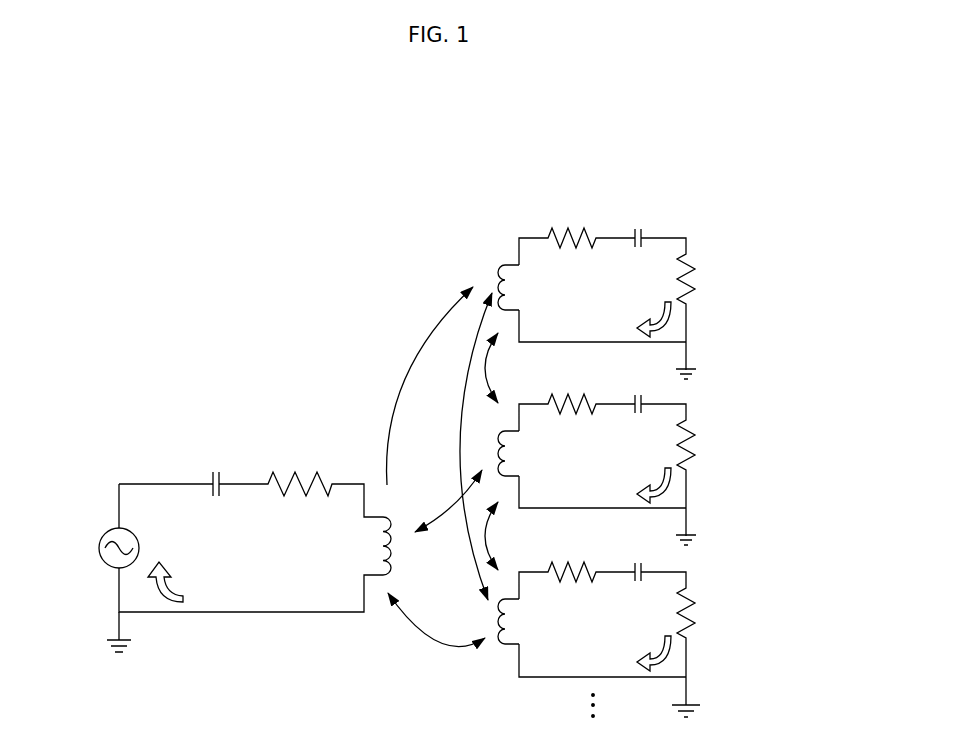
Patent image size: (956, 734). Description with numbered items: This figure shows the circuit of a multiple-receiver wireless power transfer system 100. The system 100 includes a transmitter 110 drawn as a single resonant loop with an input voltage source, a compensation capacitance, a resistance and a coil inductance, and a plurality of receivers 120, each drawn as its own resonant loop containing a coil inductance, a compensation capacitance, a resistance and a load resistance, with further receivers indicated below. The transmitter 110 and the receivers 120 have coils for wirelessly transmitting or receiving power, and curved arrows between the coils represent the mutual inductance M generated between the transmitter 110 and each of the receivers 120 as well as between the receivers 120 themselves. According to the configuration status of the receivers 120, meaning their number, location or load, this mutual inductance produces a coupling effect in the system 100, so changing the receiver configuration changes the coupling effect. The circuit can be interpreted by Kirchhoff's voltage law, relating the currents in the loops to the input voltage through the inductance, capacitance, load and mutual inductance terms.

The multiple-receiver wireless power transfer system 100 is at (250, 174).
The transmitter 110 is at (248, 357).
The receivers 120 is at (724, 241).